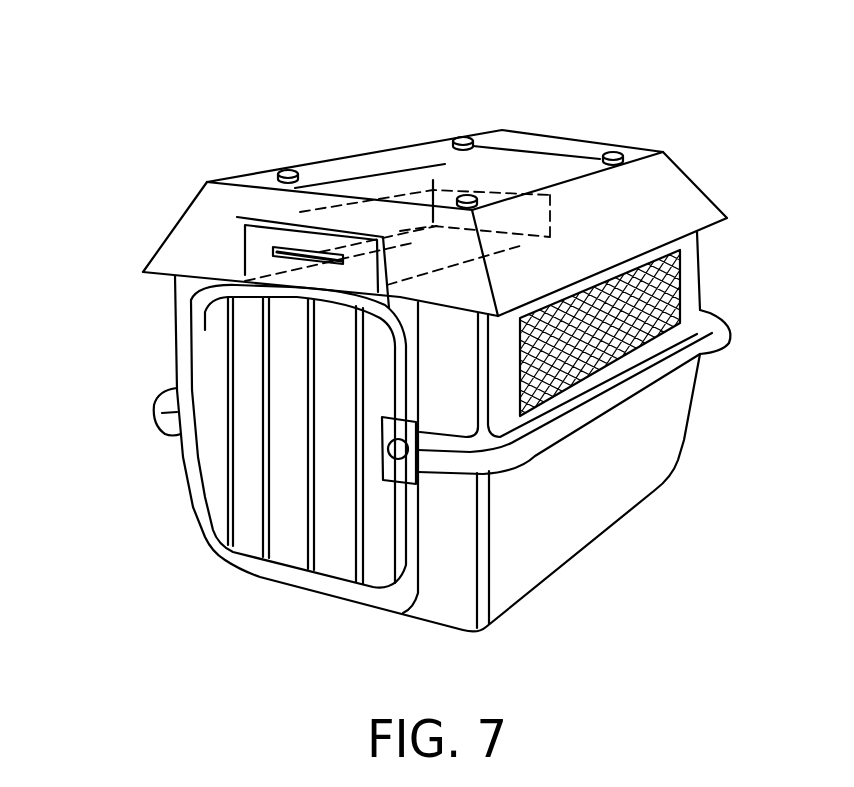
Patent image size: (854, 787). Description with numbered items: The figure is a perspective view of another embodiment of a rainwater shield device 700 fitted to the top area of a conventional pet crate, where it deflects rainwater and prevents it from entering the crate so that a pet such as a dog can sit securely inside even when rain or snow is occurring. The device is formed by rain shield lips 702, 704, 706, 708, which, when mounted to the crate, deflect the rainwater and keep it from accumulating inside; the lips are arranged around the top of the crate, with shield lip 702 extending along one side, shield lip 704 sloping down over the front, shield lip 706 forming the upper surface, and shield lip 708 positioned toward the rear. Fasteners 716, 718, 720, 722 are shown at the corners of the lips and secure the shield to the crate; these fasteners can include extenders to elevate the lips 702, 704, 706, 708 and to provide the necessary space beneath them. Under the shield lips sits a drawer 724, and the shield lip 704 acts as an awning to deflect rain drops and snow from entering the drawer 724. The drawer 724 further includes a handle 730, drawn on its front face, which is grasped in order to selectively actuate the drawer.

The rainwater shield device 700 is at (156, 166).
The rain shield lip 702 is at (447, 169).
The rain shield lip 704 is at (213, 215).
The rain shield lip 706 is at (357, 157).
The rain shield lip 708 is at (577, 145).
The fastener 716 is at (469, 194).
The fastener 718 is at (617, 152).
The fastener 720 is at (281, 168).
The fastener 722 is at (461, 136).
The drawer 724 is at (252, 296).
The handle 730 is at (300, 254).